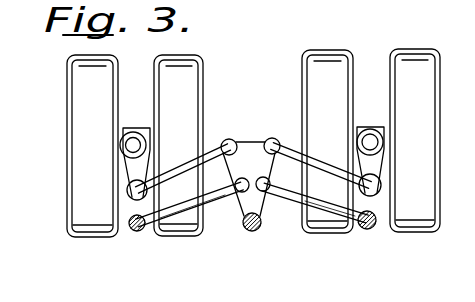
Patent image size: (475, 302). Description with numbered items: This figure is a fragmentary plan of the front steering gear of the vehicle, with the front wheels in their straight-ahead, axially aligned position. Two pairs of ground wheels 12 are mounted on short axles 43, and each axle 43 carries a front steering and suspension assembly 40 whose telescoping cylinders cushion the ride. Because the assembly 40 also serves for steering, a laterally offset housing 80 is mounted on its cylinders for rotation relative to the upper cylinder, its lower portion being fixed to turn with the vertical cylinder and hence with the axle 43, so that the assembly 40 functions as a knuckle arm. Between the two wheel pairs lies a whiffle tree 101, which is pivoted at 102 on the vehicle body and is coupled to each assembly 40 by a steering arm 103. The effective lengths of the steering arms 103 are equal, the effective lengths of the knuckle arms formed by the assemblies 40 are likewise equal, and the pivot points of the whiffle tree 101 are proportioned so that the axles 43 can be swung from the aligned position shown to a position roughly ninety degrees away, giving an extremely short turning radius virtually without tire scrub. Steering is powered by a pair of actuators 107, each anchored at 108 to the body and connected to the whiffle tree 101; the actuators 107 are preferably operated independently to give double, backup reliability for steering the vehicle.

The ground wheels 12 is at (76, 80).
The axle 43 is at (123, 128).
The front steering and suspension assembly 40 is at (153, 152).
The housing 80 is at (123, 163).
The whiffle tree 101 is at (264, 128).
The steering arms 103 is at (259, 117).
The pivot 102 is at (247, 233).
The actuators 107 is at (172, 223).
The anchor 108 is at (133, 233).